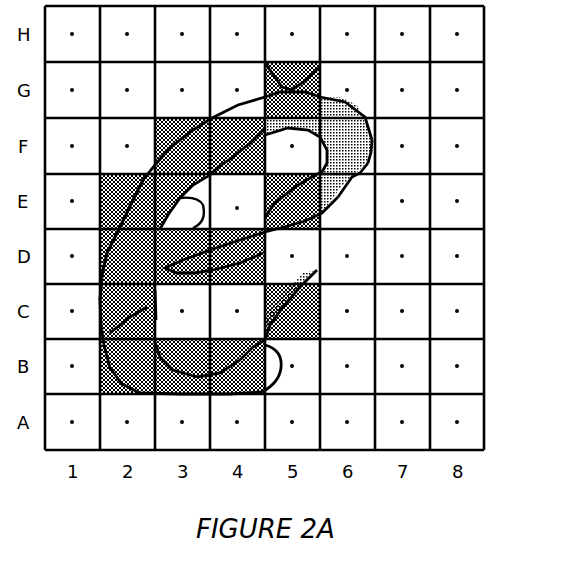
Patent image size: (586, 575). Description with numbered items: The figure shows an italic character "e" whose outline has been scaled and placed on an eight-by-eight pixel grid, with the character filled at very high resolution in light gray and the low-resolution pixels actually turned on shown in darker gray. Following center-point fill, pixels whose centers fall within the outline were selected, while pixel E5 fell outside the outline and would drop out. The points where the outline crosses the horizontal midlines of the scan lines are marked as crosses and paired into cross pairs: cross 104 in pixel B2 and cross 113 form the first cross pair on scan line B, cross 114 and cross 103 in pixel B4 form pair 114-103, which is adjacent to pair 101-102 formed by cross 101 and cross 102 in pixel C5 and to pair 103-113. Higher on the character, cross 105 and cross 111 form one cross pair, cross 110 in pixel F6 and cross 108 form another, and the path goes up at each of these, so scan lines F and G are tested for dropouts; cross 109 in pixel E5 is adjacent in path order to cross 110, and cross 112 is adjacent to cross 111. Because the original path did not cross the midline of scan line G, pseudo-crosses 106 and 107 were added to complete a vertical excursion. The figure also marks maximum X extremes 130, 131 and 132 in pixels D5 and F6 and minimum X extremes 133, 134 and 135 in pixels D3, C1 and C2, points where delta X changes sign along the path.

The cross 101 is at (265, 302).
The cross 102 is at (302, 298).
The cross 103 is at (274, 378).
The cross 104 is at (103, 378).
The cross 105 is at (157, 135).
The cross 106 is at (265, 62).
The cross 107 is at (320, 62).
The cross 108 is at (372, 138).
The cross 109 is at (264, 214).
The cross 110 is at (270, 192).
The cross 111 is at (256, 172).
The cross 112 is at (184, 222).
The cross 113 is at (173, 368).
The cross 114 is at (222, 367).
The maximum X extreme 130 is at (304, 284).
The maximum X extreme 131 is at (355, 172).
The maximum X extreme 132 is at (371, 118).
The minimum X extreme 133 is at (163, 298).
The minimum X extreme 134 is at (100, 300).
The minimum X extreme 135 is at (105, 340).